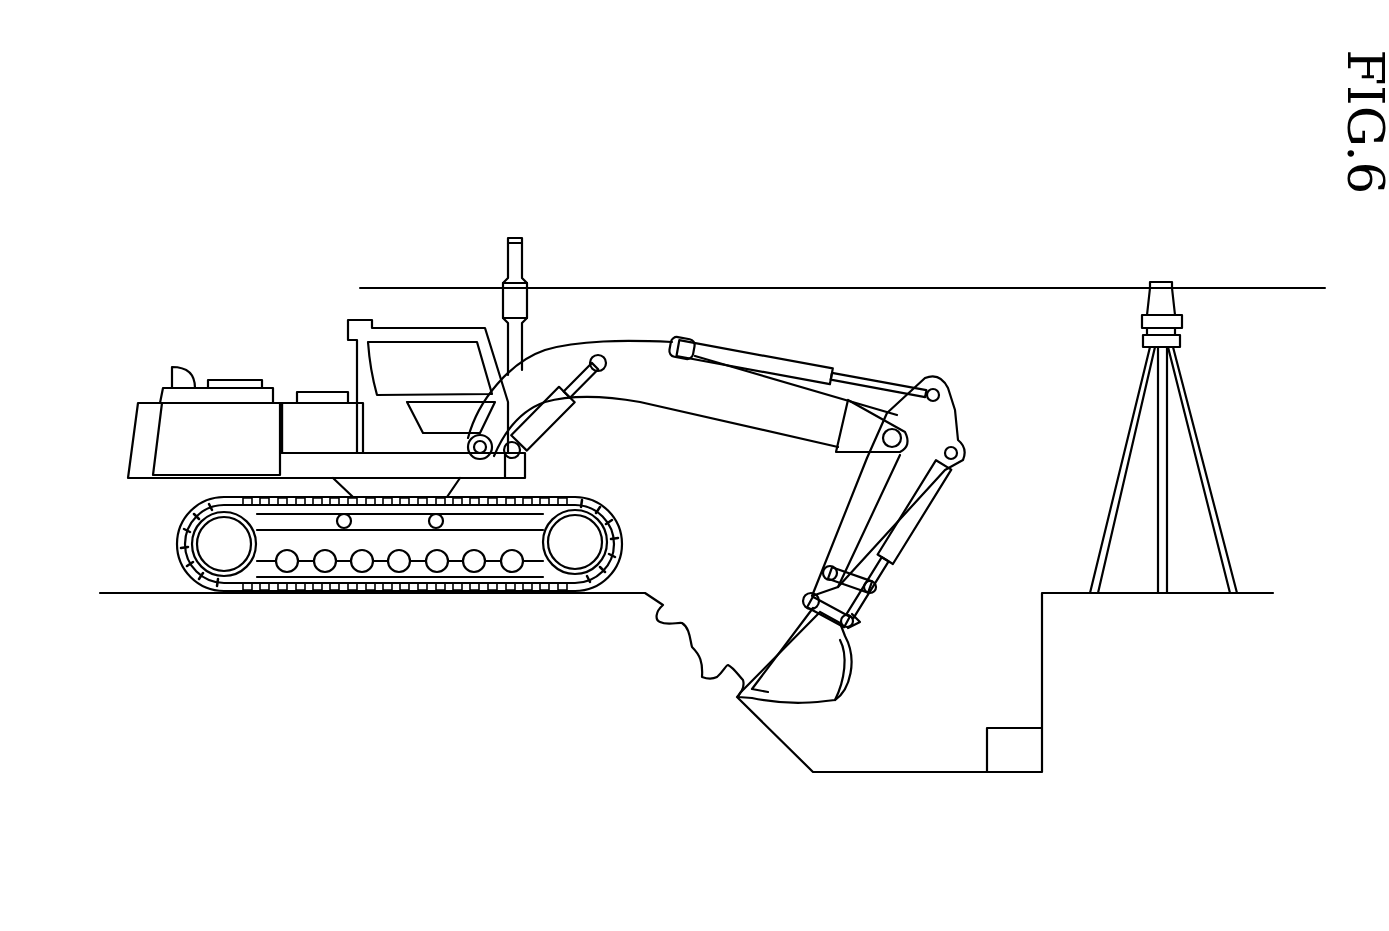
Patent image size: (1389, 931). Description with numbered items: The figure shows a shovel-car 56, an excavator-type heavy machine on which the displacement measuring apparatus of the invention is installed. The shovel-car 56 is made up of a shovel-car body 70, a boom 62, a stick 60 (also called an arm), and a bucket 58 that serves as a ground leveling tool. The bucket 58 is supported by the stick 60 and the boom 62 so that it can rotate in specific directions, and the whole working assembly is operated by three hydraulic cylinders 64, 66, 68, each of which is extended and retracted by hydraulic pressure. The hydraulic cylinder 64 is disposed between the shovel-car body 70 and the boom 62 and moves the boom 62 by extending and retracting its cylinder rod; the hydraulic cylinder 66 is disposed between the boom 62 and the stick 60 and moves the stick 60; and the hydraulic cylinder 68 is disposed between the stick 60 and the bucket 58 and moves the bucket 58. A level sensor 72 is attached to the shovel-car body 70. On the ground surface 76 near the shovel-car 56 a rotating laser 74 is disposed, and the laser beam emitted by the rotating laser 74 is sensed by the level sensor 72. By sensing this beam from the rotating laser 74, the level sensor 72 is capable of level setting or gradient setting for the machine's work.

The shovel-car 56 is at (313, 358).
The bucket 58 is at (838, 670).
The stick 60 is at (855, 518).
The boom 62 is at (684, 400).
The hydraulic cylinder 64 is at (553, 423).
The hydraulic cylinder 66 is at (873, 380).
The hydraulic cylinder 68 is at (917, 515).
The shovel-car body 70 is at (312, 425).
The level sensor 72 is at (538, 315).
The rotating laser 74 is at (1198, 320).
The ground surface 76 is at (787, 743).